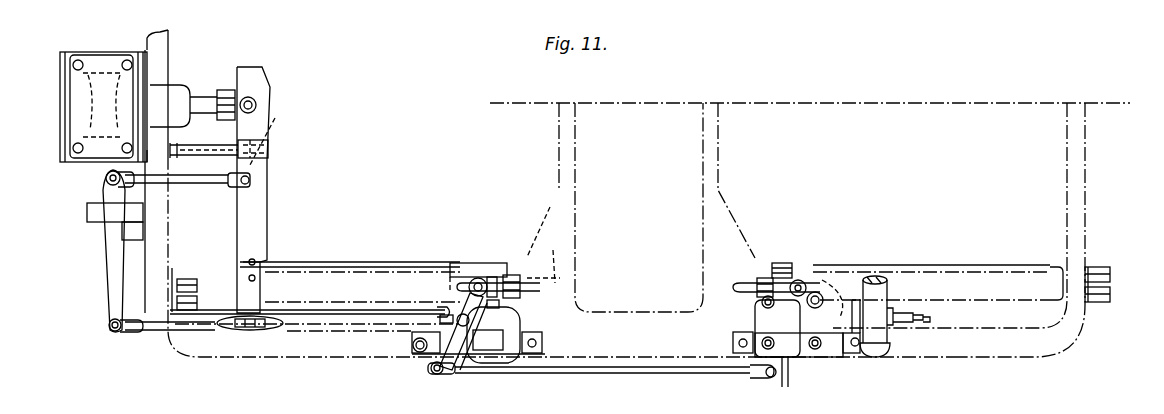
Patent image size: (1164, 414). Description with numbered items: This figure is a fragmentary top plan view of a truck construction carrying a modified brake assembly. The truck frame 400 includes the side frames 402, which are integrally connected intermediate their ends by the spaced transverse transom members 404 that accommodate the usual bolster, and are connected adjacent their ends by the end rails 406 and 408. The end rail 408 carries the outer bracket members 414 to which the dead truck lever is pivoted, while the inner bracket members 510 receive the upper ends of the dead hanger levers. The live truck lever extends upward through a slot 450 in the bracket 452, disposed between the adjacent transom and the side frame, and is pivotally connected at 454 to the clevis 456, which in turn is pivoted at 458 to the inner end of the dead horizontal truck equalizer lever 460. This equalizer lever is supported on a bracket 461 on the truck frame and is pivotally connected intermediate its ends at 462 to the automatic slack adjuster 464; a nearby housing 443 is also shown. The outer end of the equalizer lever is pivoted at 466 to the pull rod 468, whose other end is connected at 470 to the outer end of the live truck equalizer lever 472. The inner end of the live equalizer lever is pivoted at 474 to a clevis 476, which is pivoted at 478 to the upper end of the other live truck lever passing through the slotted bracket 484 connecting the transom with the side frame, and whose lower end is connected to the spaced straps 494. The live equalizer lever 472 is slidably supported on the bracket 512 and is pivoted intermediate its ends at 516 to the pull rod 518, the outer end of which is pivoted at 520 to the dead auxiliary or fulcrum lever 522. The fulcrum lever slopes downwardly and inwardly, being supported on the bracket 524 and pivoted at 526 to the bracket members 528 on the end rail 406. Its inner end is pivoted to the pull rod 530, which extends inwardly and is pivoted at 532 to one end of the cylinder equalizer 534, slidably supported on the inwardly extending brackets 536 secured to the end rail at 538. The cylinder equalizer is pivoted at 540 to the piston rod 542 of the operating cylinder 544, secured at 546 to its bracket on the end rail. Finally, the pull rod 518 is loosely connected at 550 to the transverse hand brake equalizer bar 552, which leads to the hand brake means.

The truck frame 400 is at (963, 349).
The side frames 402 is at (903, 352).
The transverse transom members 404 is at (710, 150).
The end rail 406 is at (162, 225).
The end rail 408 is at (1073, 186).
The outer bracket members 414 is at (1107, 283).
The housing 443 is at (803, 367).
The slot 450 is at (820, 277).
The bracket 452 is at (735, 262).
The pivot 454 is at (765, 262).
The clevis 456 is at (770, 267).
The pivot 458 is at (800, 278).
The dead horizontal truck equalizer lever 460 is at (787, 363).
The bracket 461 is at (827, 348).
The pivot 462 is at (463, 273).
The automatic slack adjuster 464 is at (840, 317).
The pivot 466 is at (767, 377).
The pull rod 468 is at (605, 341).
The pivot 470 is at (432, 377).
The live truck equalizer lever 472 is at (440, 337).
The pivot 474 is at (473, 282).
The clevis 476 is at (485, 277).
The pivot 478 is at (513, 276).
The bracket 484 is at (552, 250).
The spaced straps 494 is at (322, 252).
The inner bracket members 510 is at (163, 333).
The bracket 512 is at (483, 335).
The pivot 516 is at (430, 340).
The pull rod 518 is at (330, 325).
The pivot 520 is at (110, 327).
The dead auxiliary or fulcrum lever 522 is at (115, 295).
The bracket 524 is at (87, 212).
The pivot 526 is at (107, 177).
The bracket members 528 is at (137, 258).
The pull rod 530 is at (183, 180).
The pivot 532 is at (250, 177).
The cylinder equalizer 534 is at (275, 118).
The brackets 536 is at (198, 148).
The securing means 538 is at (143, 162).
The pivot 540 is at (257, 98).
The piston rod 542 is at (203, 93).
The operating cylinder 544 is at (80, 92).
The securing means 546 is at (104, 105).
The loose connection 550 is at (240, 327).
The transverse hand brake equalizer bar 552 is at (257, 205).